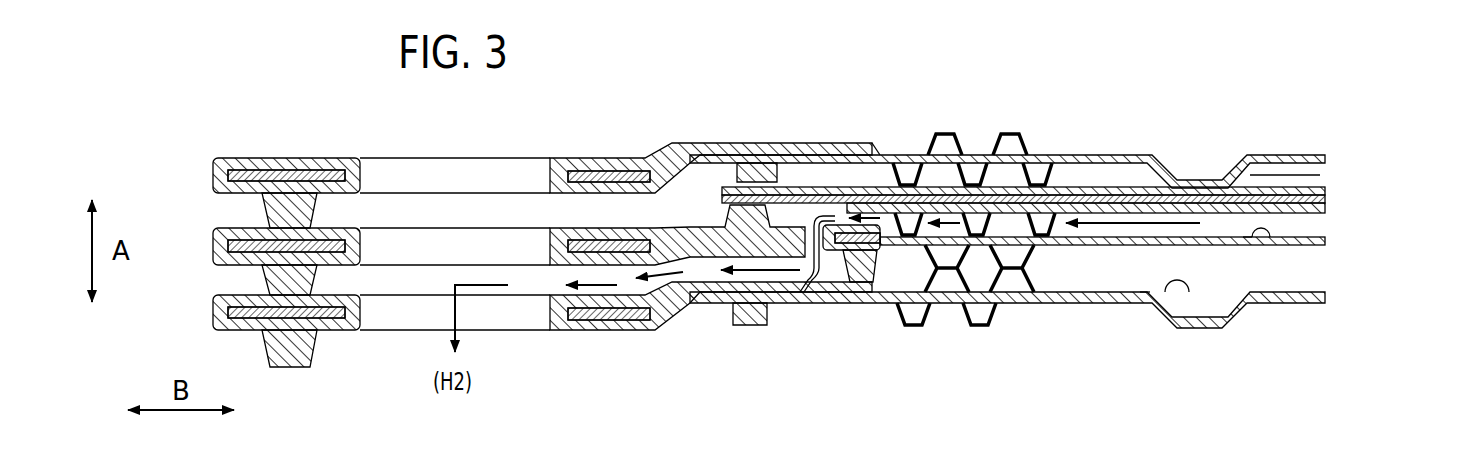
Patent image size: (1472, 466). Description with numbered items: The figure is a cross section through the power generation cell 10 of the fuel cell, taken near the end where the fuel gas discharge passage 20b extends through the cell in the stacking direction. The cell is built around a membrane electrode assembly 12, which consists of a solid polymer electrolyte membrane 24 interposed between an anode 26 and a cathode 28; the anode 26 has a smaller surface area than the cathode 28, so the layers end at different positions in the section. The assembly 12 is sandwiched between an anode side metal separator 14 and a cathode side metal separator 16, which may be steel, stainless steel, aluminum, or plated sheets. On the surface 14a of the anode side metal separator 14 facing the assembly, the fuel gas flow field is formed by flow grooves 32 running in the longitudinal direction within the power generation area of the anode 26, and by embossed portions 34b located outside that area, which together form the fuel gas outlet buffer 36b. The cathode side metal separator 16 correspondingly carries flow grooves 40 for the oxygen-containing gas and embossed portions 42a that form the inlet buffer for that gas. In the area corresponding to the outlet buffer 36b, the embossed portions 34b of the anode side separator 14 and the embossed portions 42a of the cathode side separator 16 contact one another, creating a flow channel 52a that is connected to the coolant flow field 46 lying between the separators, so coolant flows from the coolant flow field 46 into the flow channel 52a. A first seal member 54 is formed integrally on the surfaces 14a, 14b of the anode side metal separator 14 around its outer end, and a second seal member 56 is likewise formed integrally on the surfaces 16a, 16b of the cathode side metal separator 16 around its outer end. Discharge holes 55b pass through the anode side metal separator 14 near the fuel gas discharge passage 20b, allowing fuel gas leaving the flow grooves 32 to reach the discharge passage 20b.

The power generation cell 10 is at (1094, 66).
The membrane electrode assembly 12 is at (1087, 207).
The anode side metal separator 14 is at (1324, 250).
The surface 14a is at (1273, 246).
The surface 14b is at (1247, 247).
The cathode side metal separator 16 is at (1174, 160).
The surface 16a is at (1145, 305).
The surface 16b is at (1186, 326).
The fuel gas discharge passage 20b is at (392, 183).
The solid polymer electrolyte membrane 24 is at (1327, 199).
The anode 26 is at (1327, 209).
The cathode 28 is at (1327, 190).
The flow grooves 32 is at (1120, 222).
The embossed portions 34b is at (893, 155).
The outlet buffer 36b is at (916, 266).
The flow grooves 40 is at (1287, 178).
The embossed portions 42a is at (977, 153).
The coolant flow field 46 is at (1070, 268).
The flow channel 52a is at (941, 305).
The first seal member 54 is at (213, 246).
The discharge holes 55b is at (804, 296).
The second seal member 56 is at (213, 308).